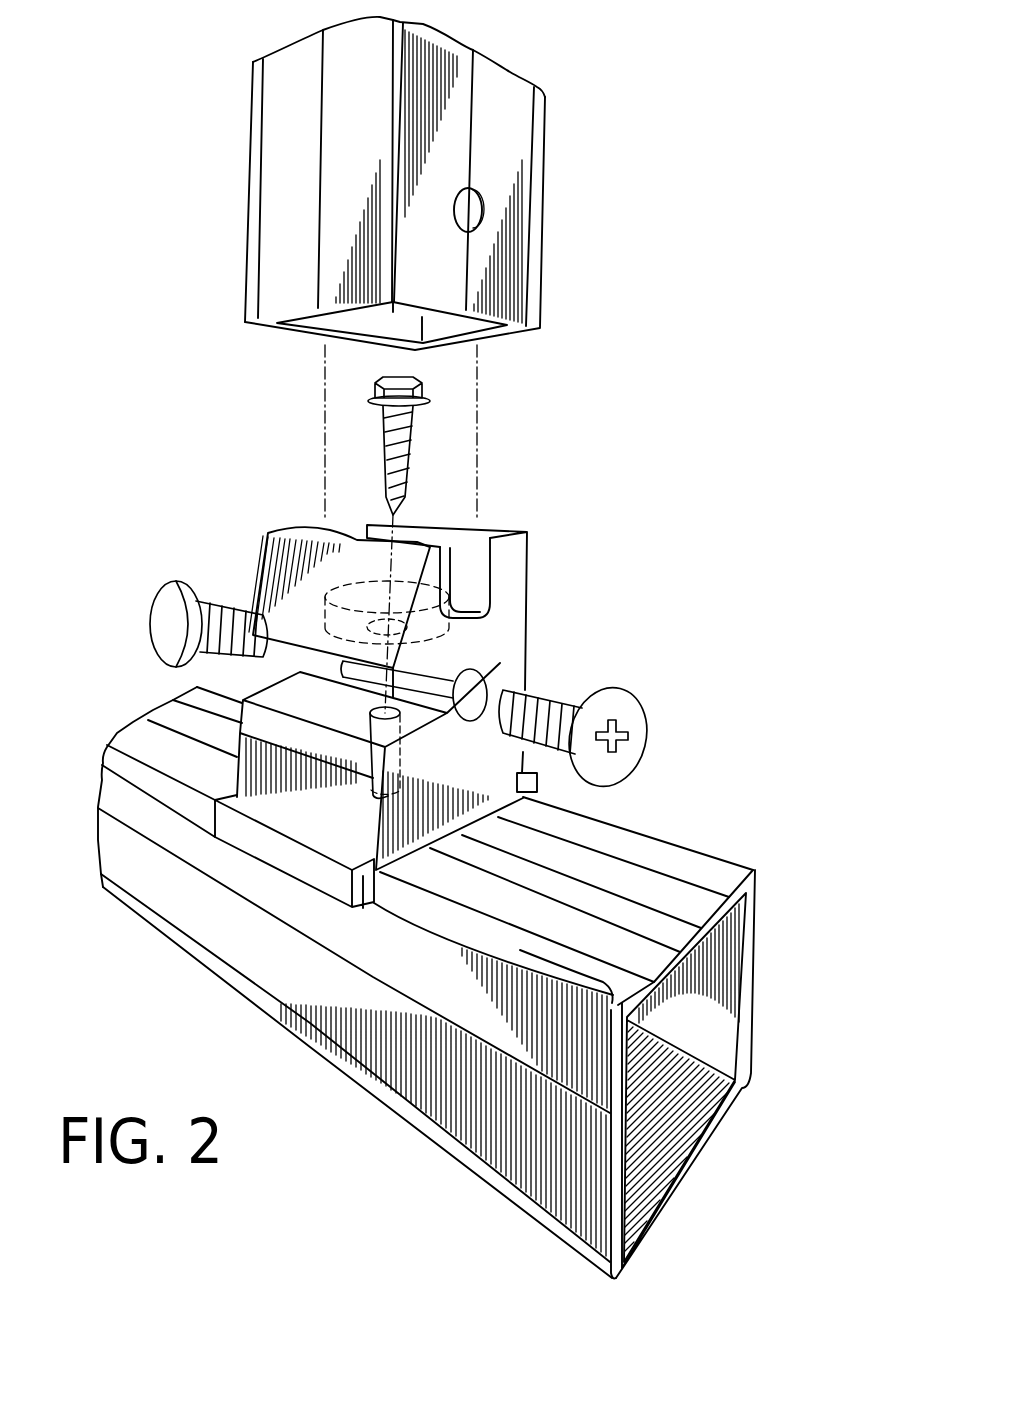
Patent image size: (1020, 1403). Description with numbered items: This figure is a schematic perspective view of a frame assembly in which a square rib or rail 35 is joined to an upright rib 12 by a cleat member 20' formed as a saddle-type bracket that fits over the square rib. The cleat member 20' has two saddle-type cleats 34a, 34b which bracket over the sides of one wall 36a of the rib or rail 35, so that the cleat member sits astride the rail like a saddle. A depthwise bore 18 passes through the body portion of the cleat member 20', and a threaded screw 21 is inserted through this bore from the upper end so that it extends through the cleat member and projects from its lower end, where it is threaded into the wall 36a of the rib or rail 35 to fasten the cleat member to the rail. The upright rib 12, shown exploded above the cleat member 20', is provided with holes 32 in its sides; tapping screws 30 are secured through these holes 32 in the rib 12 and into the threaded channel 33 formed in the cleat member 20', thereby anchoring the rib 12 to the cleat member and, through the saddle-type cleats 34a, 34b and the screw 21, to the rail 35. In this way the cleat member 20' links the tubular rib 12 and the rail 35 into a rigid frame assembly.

The rib 12 is at (372, 268).
The holes 32 is at (466, 211).
The screw 21 is at (366, 445).
The cleat member 20' is at (470, 742).
The tapping screws 30 is at (146, 620).
The threaded channel 33 is at (481, 679).
The depthwise bore 18 is at (400, 764).
The saddle-type cleat 34a is at (325, 878).
The saddle-type cleat 34b is at (537, 792).
The rib or rail 35 is at (469, 982).
The wall 36a is at (722, 913).